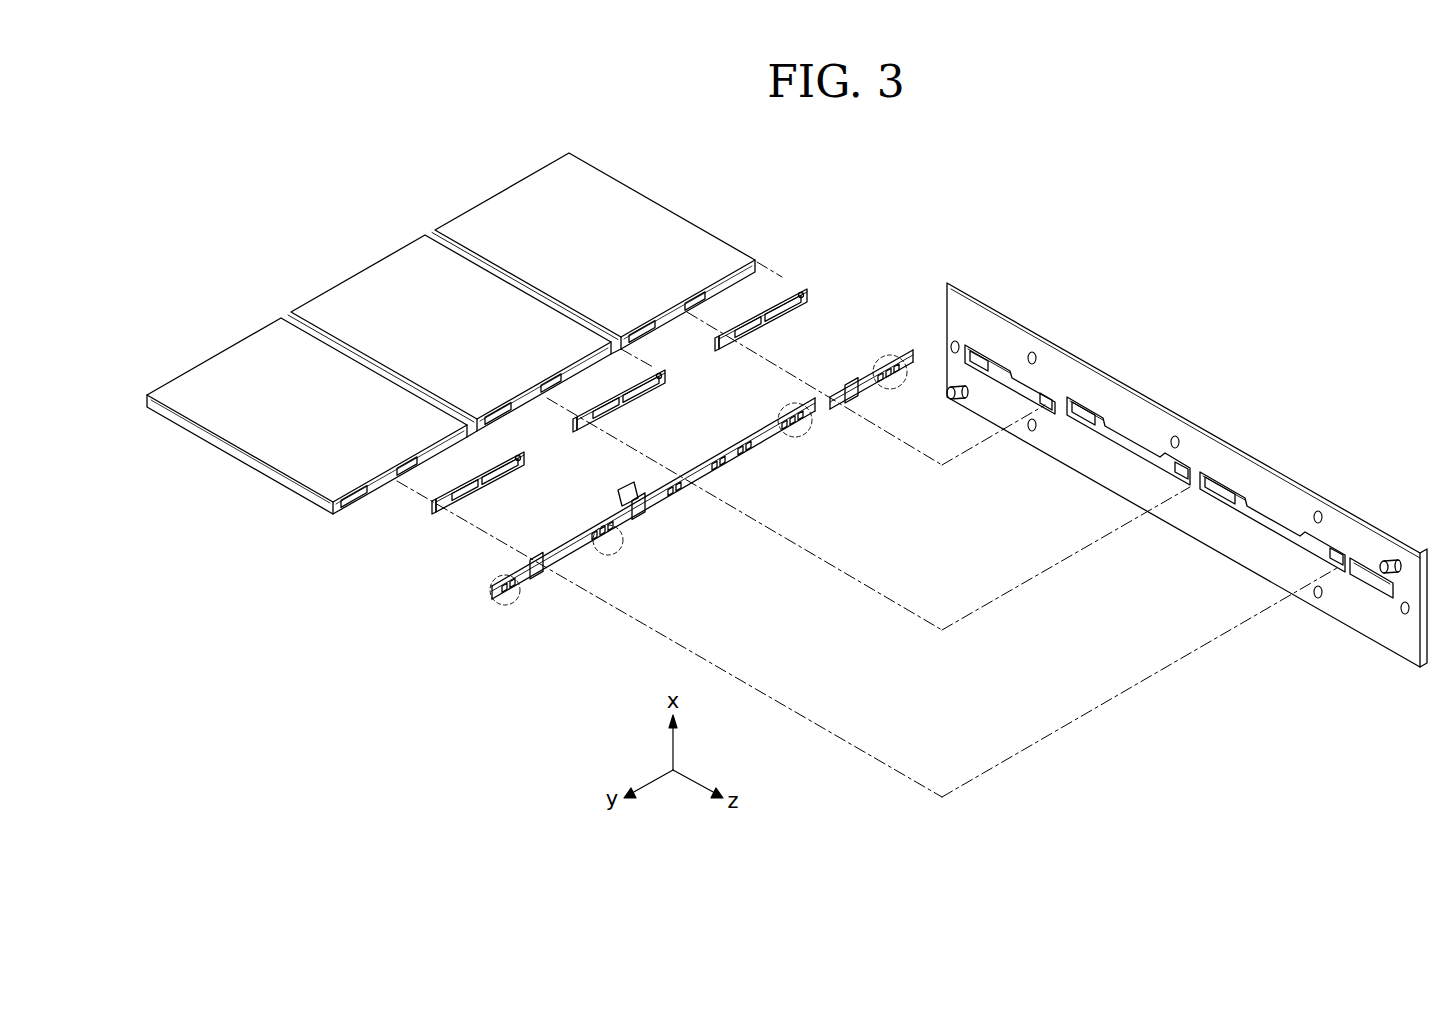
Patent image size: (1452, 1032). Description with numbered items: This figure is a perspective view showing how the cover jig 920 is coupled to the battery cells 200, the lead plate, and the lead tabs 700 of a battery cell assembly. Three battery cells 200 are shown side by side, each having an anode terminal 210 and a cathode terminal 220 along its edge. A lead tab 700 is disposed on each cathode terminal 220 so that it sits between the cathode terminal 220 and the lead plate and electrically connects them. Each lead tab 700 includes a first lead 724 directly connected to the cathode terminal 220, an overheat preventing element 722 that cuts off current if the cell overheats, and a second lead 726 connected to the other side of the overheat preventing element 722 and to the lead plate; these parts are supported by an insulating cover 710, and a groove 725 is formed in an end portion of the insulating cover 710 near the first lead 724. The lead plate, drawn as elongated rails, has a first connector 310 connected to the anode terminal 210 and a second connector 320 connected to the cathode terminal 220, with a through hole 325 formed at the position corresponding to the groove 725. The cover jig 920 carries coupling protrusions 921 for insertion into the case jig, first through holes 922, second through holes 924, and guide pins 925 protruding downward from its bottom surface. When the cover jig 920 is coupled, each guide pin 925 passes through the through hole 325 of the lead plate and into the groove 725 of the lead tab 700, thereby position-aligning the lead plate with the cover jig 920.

The battery cell 200 is at (577, 253).
The anode terminal 210 is at (345, 518).
The cathode terminal 220 is at (402, 482).
The first connector 310 is at (616, 553).
The second connector 320 is at (513, 607).
The through hole 325 is at (548, 573).
The lead tab 700 is at (784, 340).
The insulating cover 710 is at (437, 496).
The overheat preventing element 722 is at (483, 488).
The first lead 724 is at (462, 494).
The groove 725 is at (440, 514).
The second lead 726 is at (503, 476).
The cover jig 920 is at (1202, 540).
The coupling protrusion 921 is at (947, 400).
The first through hole 922 is at (1090, 427).
The second through hole 924 is at (1002, 372).
The guide pin 925 is at (1050, 397).